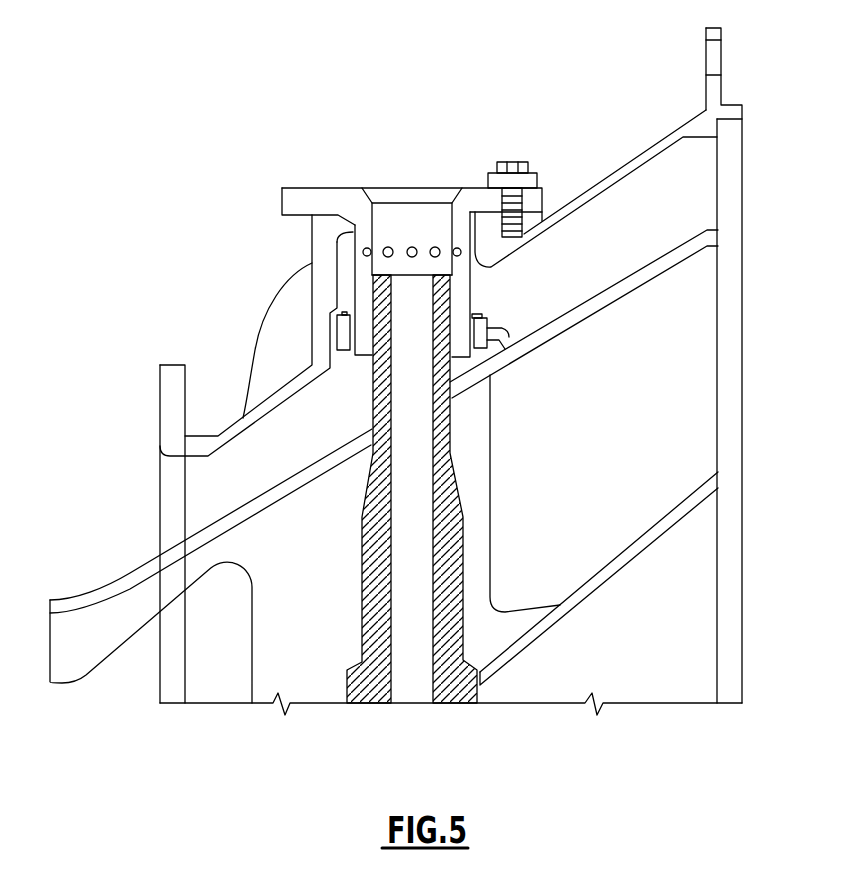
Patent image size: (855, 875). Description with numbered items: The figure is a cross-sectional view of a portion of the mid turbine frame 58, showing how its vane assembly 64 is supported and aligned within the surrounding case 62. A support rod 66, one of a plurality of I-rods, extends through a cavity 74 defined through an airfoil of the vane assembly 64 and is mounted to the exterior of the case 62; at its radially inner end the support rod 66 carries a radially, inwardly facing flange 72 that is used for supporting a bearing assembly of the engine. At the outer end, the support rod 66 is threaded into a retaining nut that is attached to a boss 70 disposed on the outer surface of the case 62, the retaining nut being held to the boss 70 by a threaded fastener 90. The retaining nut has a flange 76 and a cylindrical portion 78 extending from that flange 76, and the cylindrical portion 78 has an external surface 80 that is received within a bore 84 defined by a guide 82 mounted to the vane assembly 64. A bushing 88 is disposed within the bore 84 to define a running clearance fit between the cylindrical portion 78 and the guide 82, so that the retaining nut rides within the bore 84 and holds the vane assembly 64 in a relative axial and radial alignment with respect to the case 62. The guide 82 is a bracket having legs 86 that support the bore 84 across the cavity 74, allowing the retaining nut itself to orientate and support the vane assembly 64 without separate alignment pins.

The mid turbine frame 58 is at (526, 72).
The case 62 is at (647, 156).
The vane assembly 64 is at (276, 467).
The support rod 66 is at (460, 543).
The boss 70 is at (541, 221).
The inwardly facing flange 72 is at (476, 198).
The cavity 74 is at (314, 613).
The flange 76 is at (318, 200).
The cylindrical portion 78 is at (462, 266).
The external surface 80 is at (486, 292).
The guide 82 is at (522, 318).
The bore 84 is at (482, 362).
The legs 86 is at (513, 334).
The bushing 88 is at (345, 312).
The threaded fastener 90 is at (512, 178).